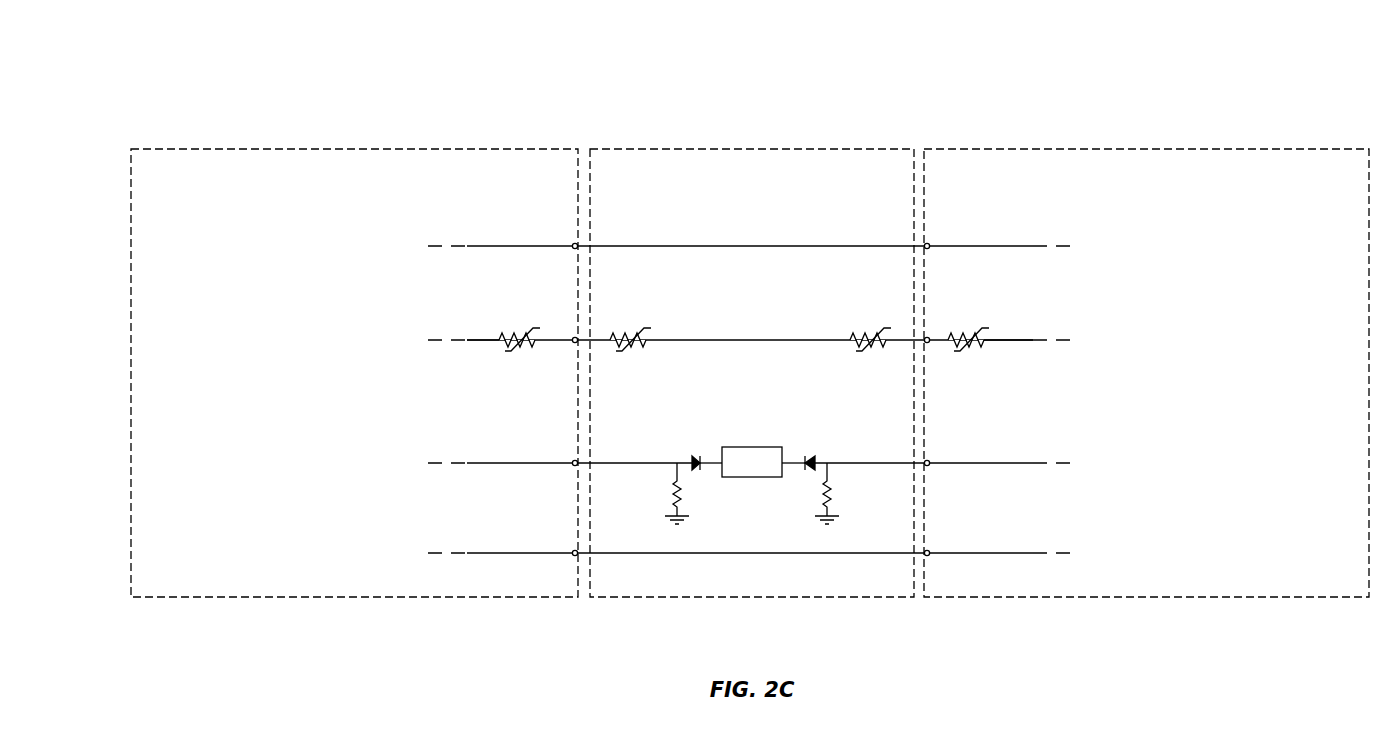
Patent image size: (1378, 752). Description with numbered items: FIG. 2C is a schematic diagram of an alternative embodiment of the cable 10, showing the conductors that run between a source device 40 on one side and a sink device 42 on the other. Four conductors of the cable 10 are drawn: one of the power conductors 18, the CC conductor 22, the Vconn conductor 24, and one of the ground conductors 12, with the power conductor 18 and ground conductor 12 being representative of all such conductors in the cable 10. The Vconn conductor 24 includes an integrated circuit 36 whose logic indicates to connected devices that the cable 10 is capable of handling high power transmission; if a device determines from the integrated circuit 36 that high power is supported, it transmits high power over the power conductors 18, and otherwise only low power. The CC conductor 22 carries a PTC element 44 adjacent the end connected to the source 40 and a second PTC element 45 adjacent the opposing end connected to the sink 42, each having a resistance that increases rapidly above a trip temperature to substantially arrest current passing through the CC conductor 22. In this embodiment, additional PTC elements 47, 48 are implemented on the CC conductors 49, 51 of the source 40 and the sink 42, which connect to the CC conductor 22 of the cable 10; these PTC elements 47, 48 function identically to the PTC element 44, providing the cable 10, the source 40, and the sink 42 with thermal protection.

The cable 10 is at (760, 149).
The ground conductor 12 is at (742, 553).
The power conductor 18 is at (733, 246).
The CC conductor 22 is at (741, 340).
The Vconn conductor 24 is at (651, 463).
The integrated circuit 36 is at (752, 447).
The source device 40 is at (320, 149).
The sink device 42 is at (1177, 149).
The PTC element 44 is at (634, 340).
The second PTC element 45 is at (882, 340).
The PTC element 47 is at (522, 340).
The PTC element 48 is at (976, 340).
The CC conductor of the source 49 is at (483, 340).
The CC conductor of the sink 51 is at (1015, 340).